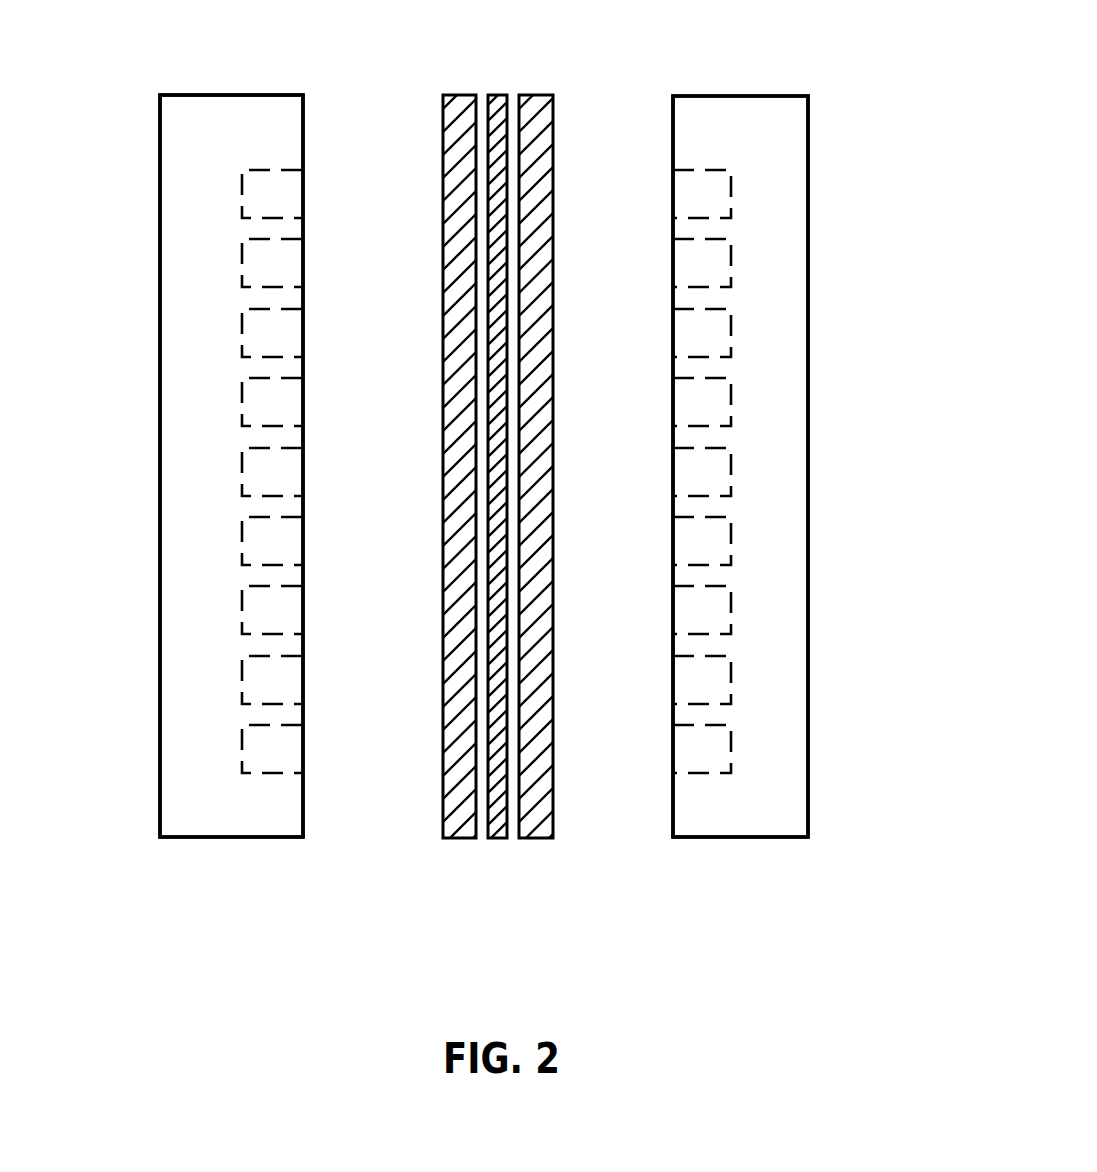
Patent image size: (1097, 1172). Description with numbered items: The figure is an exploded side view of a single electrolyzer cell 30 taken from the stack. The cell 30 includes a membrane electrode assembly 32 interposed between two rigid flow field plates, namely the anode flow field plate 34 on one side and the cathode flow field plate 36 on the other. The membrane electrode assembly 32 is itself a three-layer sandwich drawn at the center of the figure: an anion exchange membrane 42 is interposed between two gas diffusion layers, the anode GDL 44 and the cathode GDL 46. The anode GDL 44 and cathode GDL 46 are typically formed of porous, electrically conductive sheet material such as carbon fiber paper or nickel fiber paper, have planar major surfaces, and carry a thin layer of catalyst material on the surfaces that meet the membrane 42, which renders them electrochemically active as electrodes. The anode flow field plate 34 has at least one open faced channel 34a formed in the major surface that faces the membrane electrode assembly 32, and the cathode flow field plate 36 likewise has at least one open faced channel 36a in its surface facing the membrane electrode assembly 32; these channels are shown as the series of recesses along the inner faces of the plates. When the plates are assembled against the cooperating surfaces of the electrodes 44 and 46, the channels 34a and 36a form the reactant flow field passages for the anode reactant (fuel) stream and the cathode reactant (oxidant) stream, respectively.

The cell 30 is at (787, 88).
The membrane electrode assembly 32 is at (577, 857).
The anode flow field plate 34 is at (787, 360).
The open faced channel 34a is at (718, 472).
The cathode flow field plate 36 is at (183, 262).
The open faced channel 36a is at (260, 473).
The anion exchange membrane 42 is at (544, 46).
The anode GDL 44 is at (522, 106).
The cathode GDL 46 is at (464, 100).